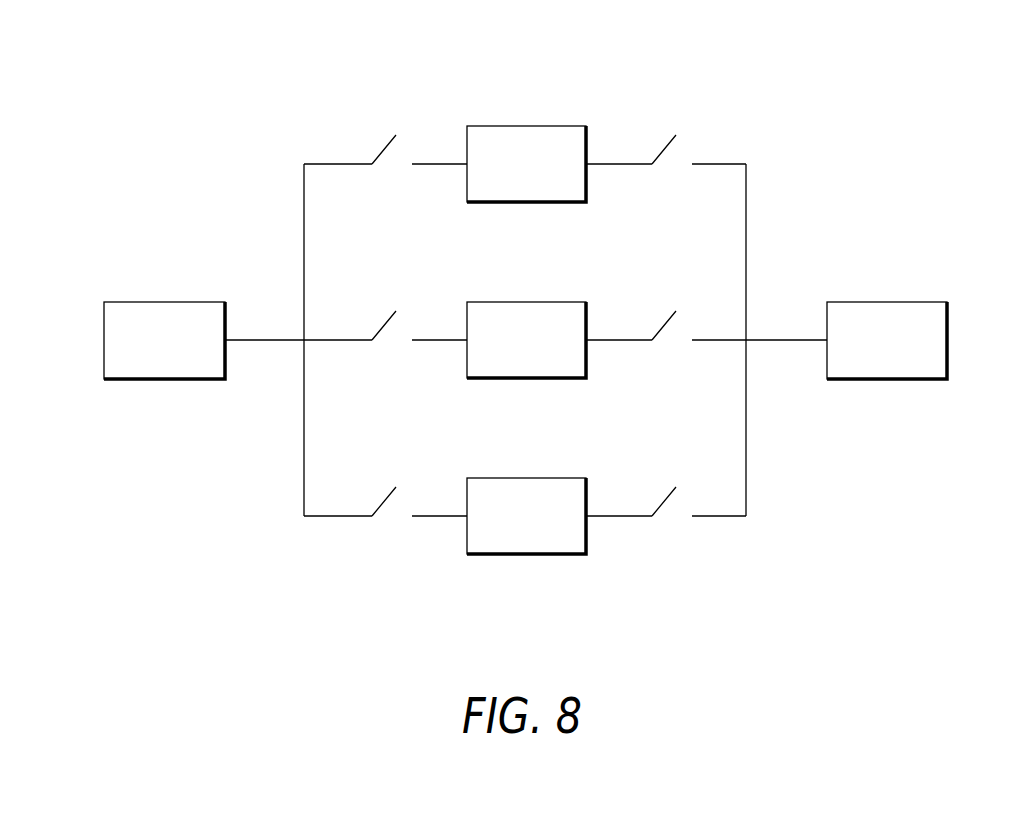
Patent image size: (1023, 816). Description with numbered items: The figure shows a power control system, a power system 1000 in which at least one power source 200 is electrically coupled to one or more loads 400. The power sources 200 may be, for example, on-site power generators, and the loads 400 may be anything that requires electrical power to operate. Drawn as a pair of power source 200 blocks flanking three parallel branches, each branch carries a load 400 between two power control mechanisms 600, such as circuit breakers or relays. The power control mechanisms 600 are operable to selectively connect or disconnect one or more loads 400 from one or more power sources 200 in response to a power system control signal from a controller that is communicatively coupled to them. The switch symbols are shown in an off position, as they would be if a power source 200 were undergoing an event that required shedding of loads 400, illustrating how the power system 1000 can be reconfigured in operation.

The power system 1000 is at (909, 79).
The power source 200 is at (175, 380).
The load 400 is at (517, 203).
The power control mechanism 600 is at (392, 170).